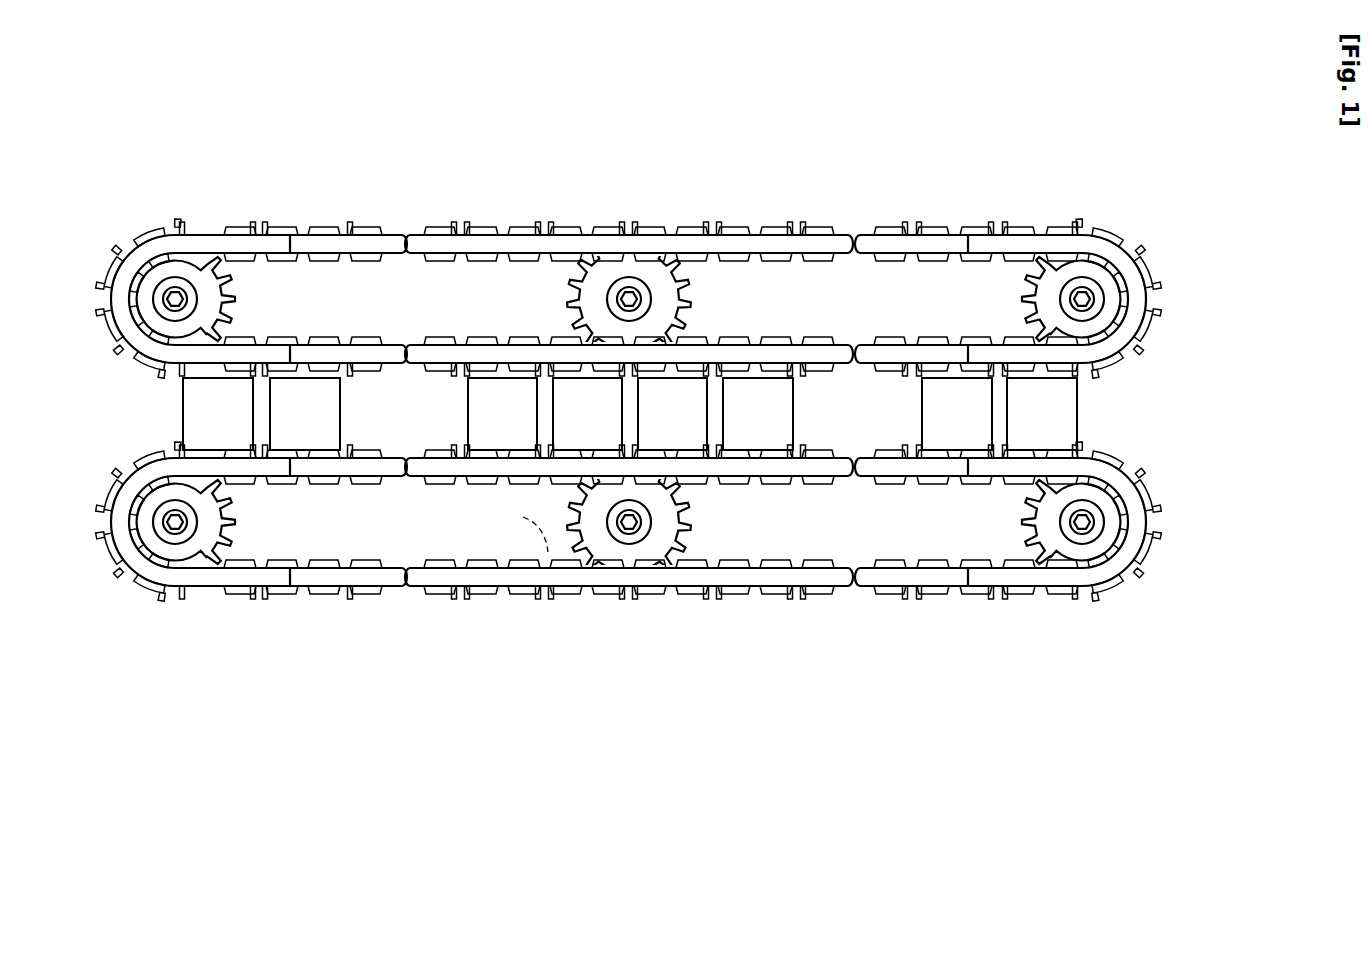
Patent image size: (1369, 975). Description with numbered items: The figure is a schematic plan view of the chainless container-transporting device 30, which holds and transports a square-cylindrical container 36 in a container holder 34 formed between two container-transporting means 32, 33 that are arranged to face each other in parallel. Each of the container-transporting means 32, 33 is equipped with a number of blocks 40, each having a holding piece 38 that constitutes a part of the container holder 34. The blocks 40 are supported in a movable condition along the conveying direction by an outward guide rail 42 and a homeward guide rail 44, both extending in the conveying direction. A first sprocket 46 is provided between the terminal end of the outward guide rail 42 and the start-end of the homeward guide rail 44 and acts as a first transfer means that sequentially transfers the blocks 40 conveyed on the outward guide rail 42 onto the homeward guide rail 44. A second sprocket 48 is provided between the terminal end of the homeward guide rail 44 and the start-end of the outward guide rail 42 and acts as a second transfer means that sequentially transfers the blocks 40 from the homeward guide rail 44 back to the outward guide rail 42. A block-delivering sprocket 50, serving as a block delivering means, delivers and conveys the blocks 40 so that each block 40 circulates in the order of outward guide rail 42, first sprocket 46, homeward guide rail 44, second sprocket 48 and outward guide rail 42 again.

The chainless container-transporting device 30 is at (165, 705).
The container-transporting means 32 is at (153, 638).
The container-transporting means 33 is at (117, 230).
The container holder 34 is at (170, 432).
The square-cylindrical container 36 is at (183, 403).
The holding piece 38 is at (556, 228).
The block 40 is at (584, 230).
The outward guide rail 42 is at (460, 357).
The homeward guide rail 44 is at (423, 250).
The first sprocket 46 is at (1018, 298).
The second sprocket 48 is at (242, 302).
The block-delivering sprocket 50 is at (714, 292).